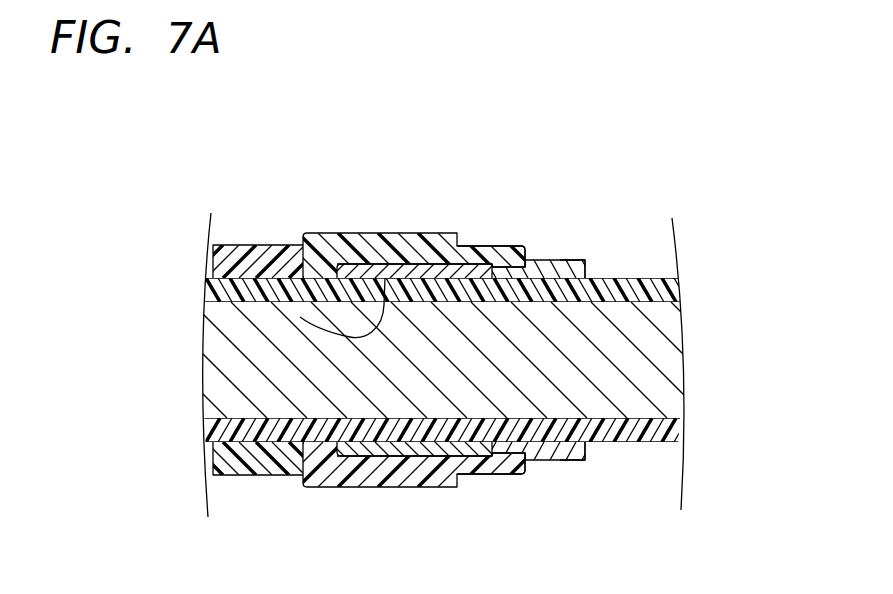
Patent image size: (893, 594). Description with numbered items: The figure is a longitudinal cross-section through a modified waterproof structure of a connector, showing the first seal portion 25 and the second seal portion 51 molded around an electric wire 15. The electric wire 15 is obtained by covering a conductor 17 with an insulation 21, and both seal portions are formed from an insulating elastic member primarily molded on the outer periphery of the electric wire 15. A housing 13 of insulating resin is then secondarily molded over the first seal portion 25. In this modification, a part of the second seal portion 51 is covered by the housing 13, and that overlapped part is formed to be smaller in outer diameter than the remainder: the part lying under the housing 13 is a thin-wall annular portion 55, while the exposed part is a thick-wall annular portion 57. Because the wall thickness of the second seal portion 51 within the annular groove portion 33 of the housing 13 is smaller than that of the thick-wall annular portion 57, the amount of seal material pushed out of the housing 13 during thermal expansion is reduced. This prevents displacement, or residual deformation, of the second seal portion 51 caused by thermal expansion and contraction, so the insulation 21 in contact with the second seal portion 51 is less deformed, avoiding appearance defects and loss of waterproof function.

The housing 13 is at (248, 244).
The electric wire 15 is at (657, 277).
The conductor 17 is at (655, 373).
The insulation 21 is at (632, 278).
The first seal portion 25 is at (311, 233).
The annular groove portion 33 is at (503, 418).
The second seal portion 51 is at (575, 259).
The thin-wall annular portion 55 is at (508, 245).
The thick-wall annular portion 57 is at (548, 260).